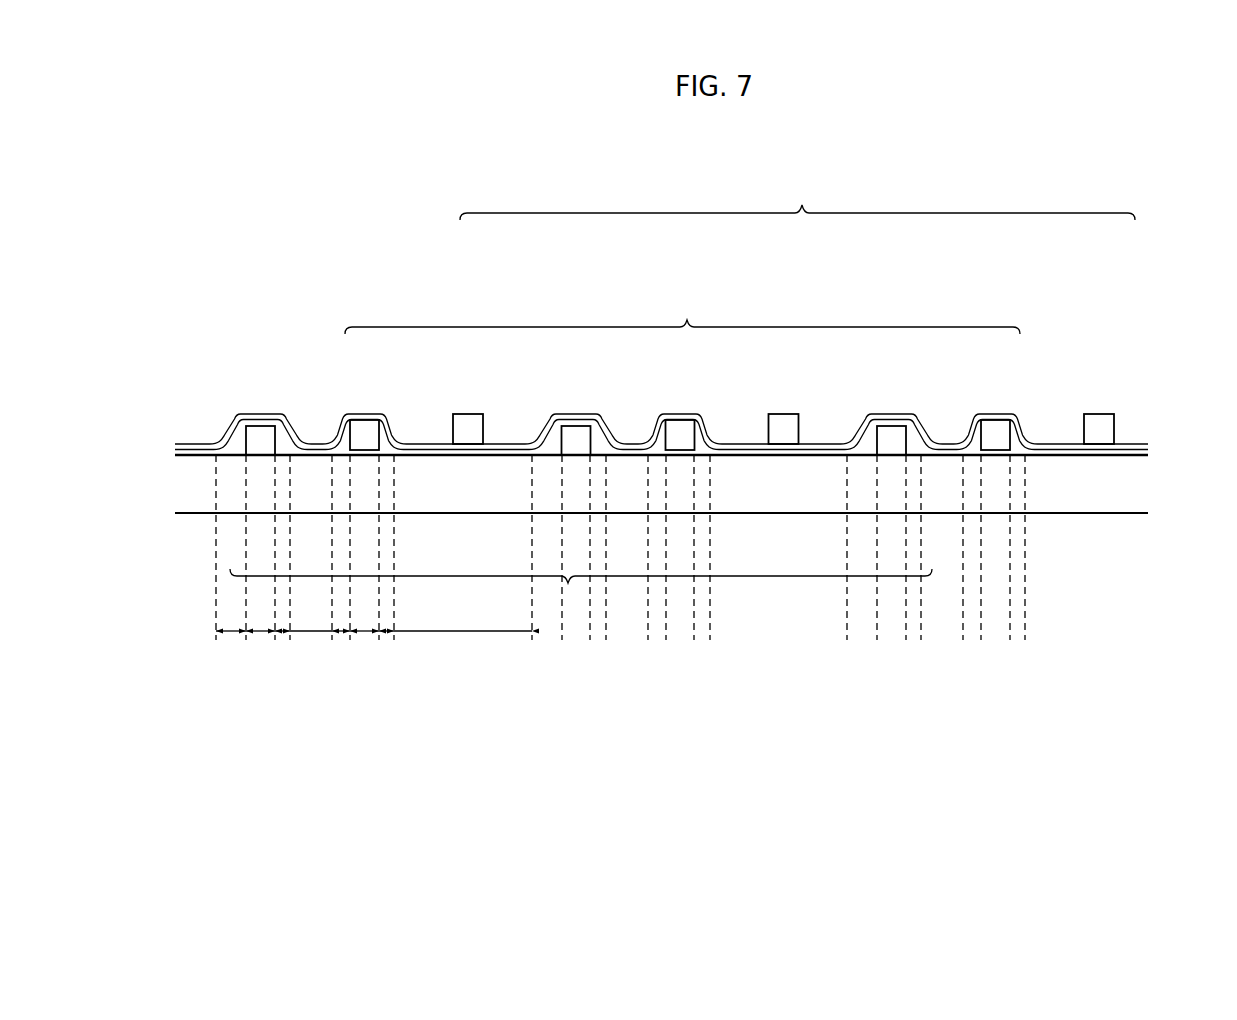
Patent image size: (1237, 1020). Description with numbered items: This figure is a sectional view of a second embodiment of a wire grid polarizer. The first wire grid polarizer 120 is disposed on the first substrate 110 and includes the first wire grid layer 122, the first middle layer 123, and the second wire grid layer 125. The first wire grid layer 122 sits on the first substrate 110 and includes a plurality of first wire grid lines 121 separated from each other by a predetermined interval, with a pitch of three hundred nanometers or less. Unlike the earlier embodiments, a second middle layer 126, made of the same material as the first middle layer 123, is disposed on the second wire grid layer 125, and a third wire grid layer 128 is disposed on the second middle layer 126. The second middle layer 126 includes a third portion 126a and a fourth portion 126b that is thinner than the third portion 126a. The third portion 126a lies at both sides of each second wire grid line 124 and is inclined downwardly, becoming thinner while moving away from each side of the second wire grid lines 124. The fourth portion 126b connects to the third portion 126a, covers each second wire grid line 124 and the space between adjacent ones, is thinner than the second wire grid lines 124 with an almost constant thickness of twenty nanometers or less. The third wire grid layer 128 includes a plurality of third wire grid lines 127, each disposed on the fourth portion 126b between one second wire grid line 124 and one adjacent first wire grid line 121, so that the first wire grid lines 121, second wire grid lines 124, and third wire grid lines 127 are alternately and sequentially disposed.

The first substrate 110 is at (1053, 492).
The first wire grid polarizer 120 is at (702, 393).
The first wire grid lines 121 is at (260, 458).
The first wire grid layer 122 is at (581, 592).
The first middle layer 123 is at (203, 458).
The second wire grid lines 124 is at (362, 430).
The second wire grid layer 125 is at (682, 311).
The second middle layer 126 is at (335, 443).
The third portion 126a is at (227, 633).
The fourth portion 126b is at (258, 633).
The third wire grid lines 127 is at (466, 414).
The third wire grid layer 128 is at (797, 195).